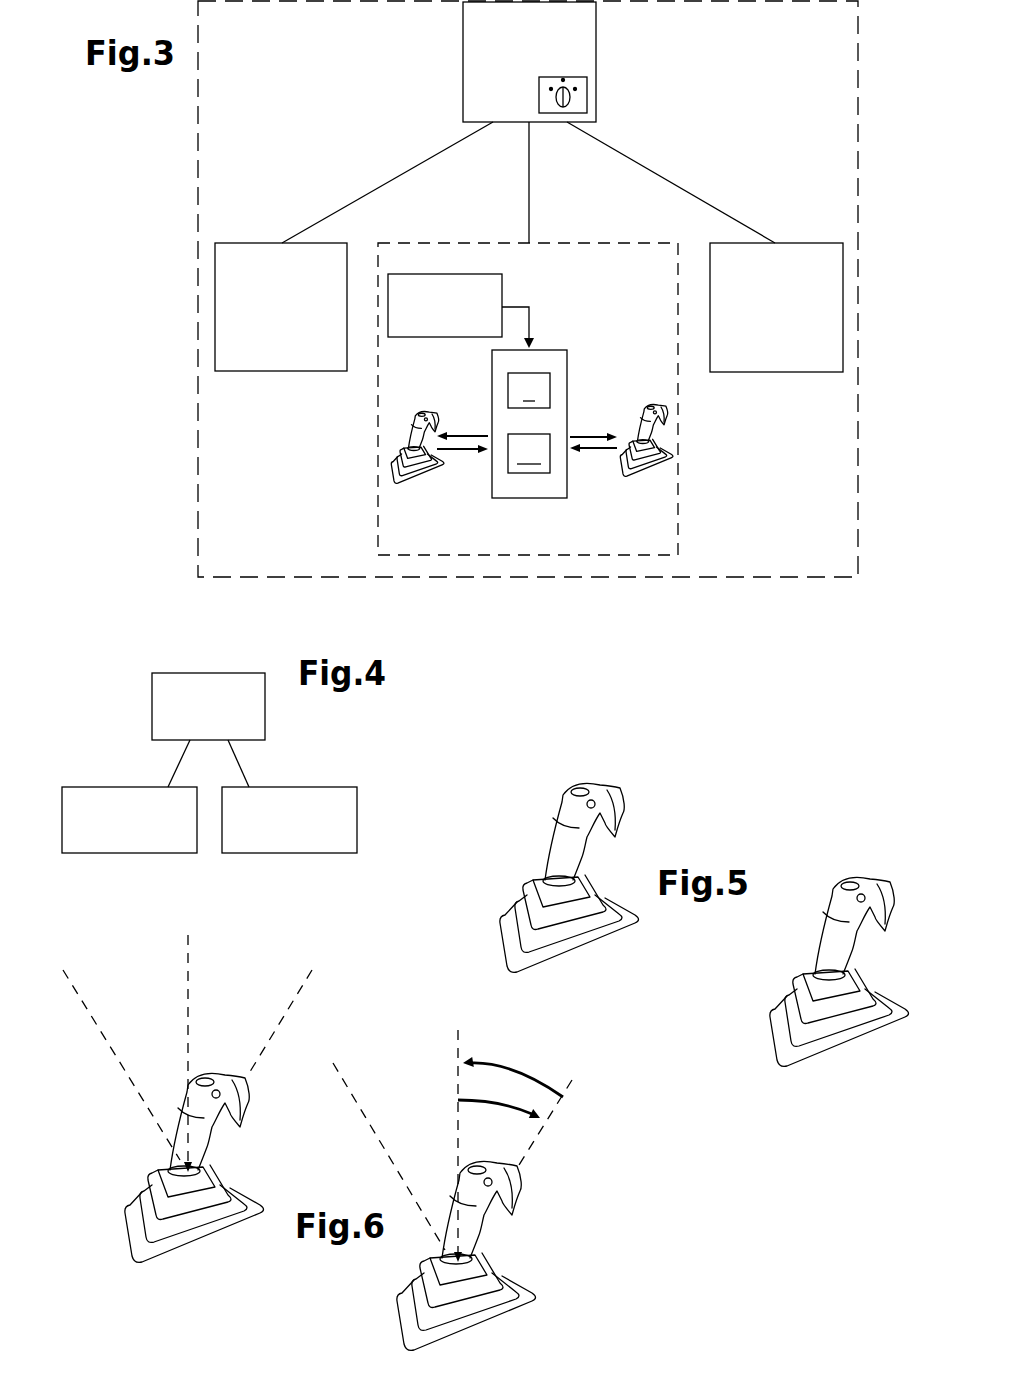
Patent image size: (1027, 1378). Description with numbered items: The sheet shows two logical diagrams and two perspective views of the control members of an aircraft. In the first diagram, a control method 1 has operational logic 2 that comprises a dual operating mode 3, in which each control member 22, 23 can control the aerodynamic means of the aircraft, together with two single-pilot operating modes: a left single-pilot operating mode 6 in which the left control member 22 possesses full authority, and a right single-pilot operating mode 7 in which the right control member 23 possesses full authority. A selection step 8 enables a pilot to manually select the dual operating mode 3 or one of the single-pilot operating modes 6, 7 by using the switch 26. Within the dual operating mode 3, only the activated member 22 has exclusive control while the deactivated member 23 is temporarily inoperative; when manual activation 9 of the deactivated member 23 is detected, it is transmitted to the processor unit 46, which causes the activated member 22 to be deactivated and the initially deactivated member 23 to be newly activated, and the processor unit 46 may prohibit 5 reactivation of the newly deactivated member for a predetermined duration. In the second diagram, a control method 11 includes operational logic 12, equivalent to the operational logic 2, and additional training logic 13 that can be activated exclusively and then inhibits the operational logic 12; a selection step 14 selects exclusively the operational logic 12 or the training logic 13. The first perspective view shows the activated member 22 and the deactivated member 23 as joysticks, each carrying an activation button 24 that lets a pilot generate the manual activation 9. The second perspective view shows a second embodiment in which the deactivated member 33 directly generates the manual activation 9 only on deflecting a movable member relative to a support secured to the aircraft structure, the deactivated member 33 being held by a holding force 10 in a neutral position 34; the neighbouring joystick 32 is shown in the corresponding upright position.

In FIG. 3, the control method 1 is at (528, 343).
In FIG. 3, the operational logic 2 is at (708, 578).
In FIG. 3, the dual operating mode 3 is at (378, 505).
In FIG. 3, the prohibit reactivation 5 is at (529, 390).
In FIG. 3, the left single-pilot operating mode 6 is at (238, 243).
In FIG. 3, the right single-pilot operating mode 7 is at (812, 243).
In FIG. 3, the selection step 8 is at (465, 49).
In FIG. 3, the manual activation 9 is at (444, 274).
In FIG. 3, the holding force 10 is at (529, 453).
In FIG. 6, the holding force 10 is at (540, 1080).
In FIG. 4, the control method 11 is at (205, 743).
In FIG. 4, the operational logic 12 is at (125, 787).
In FIG. 4, the training logic 13 is at (307, 787).
In FIG. 4, the selection step 14 is at (203, 673).
In FIG. 3, the left control member 22 is at (410, 437).
In FIG. 5, the left control member 22 is at (520, 883).
In FIG. 3, the right control member 23 is at (656, 432).
In FIG. 5, the right control member 23 is at (783, 987).
In FIG. 5, the activation button 24 is at (593, 783).
In FIG. 3, the switch 26 is at (587, 97).
In FIG. 6, the control stick in neutral position 32 is at (190, 1253).
In FIG. 6, the deactivated member 33 is at (547, 1297).
In FIG. 6, the neutral position 34 is at (455, 1048).
In FIG. 3, the processor unit 46 is at (542, 392).